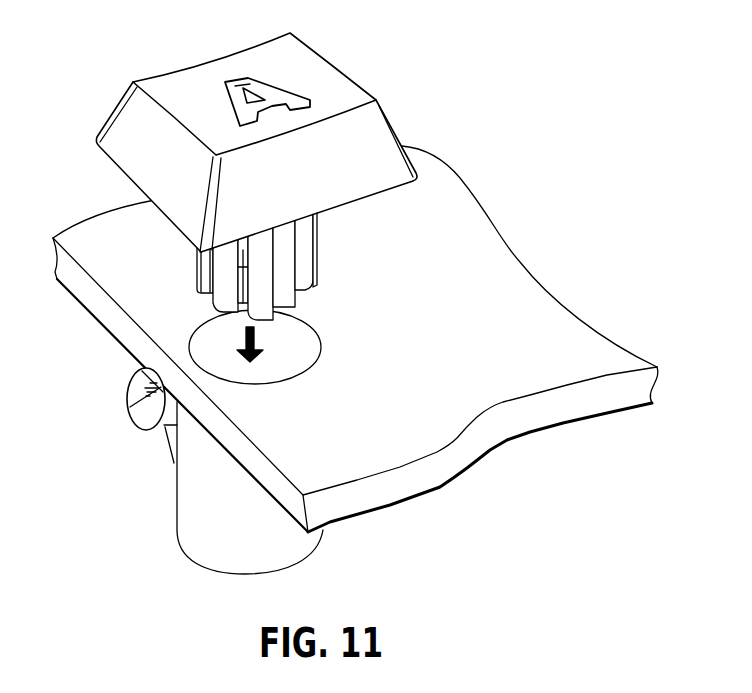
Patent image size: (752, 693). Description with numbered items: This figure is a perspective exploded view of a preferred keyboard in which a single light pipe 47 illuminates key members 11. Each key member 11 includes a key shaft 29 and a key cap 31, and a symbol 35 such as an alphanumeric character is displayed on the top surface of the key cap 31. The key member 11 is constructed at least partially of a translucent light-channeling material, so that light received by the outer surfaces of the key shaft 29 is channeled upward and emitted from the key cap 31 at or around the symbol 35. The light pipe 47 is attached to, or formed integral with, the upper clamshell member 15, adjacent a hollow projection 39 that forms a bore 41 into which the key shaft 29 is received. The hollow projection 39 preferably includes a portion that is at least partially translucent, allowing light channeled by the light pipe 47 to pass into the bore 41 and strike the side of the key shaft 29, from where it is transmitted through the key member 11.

The key member 11 is at (251, 131).
The upper clamshell member 15 is at (410, 490).
The key shaft 29 is at (303, 280).
The key cap 31 is at (383, 162).
The symbol 35 is at (233, 80).
The hollow projection 39 is at (188, 502).
The bore 41 is at (300, 356).
The light pipe 47 is at (128, 408).